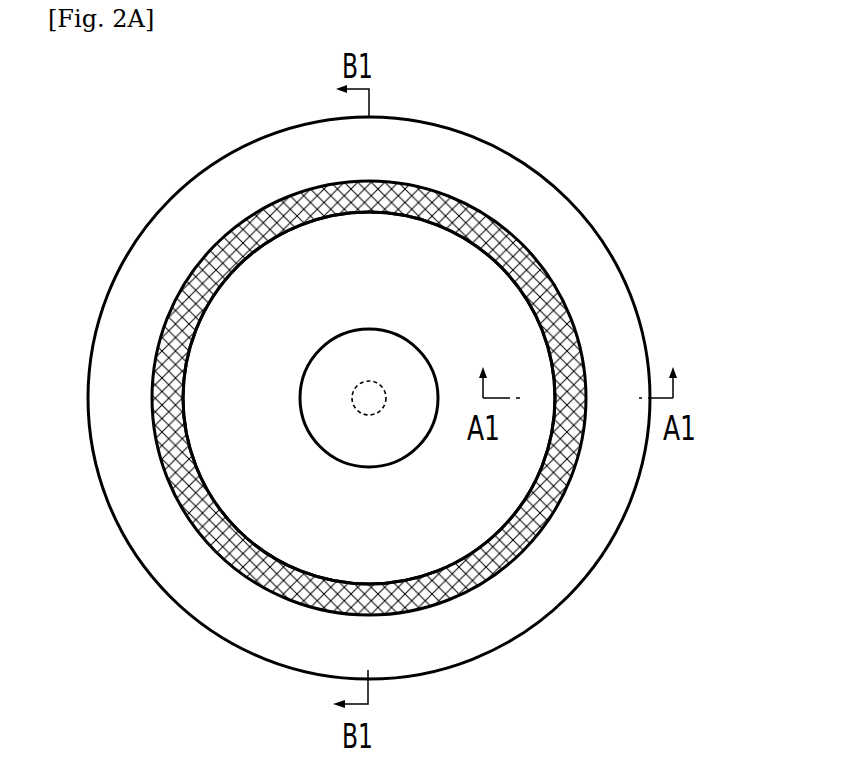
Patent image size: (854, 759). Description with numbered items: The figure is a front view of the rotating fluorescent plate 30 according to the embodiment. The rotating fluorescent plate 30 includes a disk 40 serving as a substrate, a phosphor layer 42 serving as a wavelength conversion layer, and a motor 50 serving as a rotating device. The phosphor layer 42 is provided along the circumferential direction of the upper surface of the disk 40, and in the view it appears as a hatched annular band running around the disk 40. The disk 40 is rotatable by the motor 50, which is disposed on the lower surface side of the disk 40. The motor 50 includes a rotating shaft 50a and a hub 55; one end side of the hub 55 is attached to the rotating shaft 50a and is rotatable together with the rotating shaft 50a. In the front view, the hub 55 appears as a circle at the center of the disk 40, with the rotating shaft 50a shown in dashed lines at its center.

The rotating fluorescent plate 30 is at (606, 145).
The disk 40 is at (465, 308).
The phosphor layer 42 is at (207, 282).
The motor 50 is at (279, 560).
The rotating shaft 50a is at (352, 398).
The hub 55 is at (387, 443).